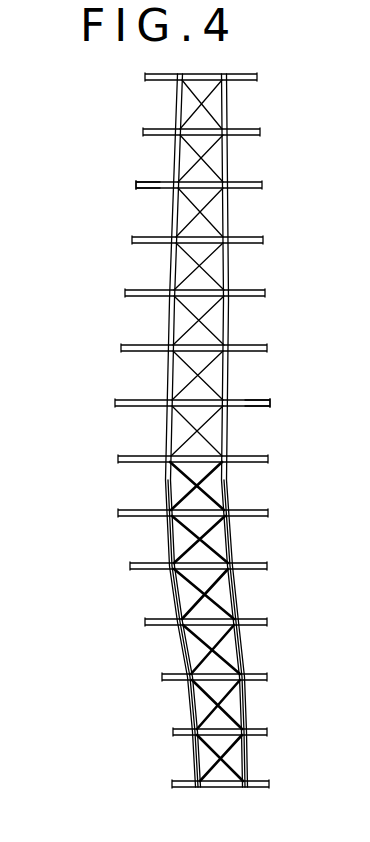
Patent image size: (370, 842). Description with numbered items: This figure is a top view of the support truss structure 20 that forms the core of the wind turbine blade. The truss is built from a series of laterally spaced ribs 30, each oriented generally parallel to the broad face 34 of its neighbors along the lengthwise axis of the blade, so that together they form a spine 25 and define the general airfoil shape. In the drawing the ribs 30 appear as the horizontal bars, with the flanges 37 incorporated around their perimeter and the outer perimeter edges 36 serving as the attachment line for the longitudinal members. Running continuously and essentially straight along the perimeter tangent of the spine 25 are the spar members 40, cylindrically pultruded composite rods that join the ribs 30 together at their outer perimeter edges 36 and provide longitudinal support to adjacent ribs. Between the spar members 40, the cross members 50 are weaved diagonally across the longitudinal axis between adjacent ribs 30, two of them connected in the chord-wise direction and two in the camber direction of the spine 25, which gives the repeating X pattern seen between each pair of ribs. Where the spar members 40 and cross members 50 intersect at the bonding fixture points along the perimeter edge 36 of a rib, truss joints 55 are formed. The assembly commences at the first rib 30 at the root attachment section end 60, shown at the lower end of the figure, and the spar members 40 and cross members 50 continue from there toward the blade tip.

The support truss structure 20 is at (98, 218).
The spine 25 is at (98, 331).
The rib 30 is at (257, 181).
The broad face 34 is at (137, 181).
The outer perimeter edge 36 is at (115, 403).
The flange 37 is at (268, 407).
The spar member 40 is at (228, 222).
The cross member 50 is at (233, 315).
The truss joint 55 is at (232, 462).
The root attachment section end 60 is at (125, 765).